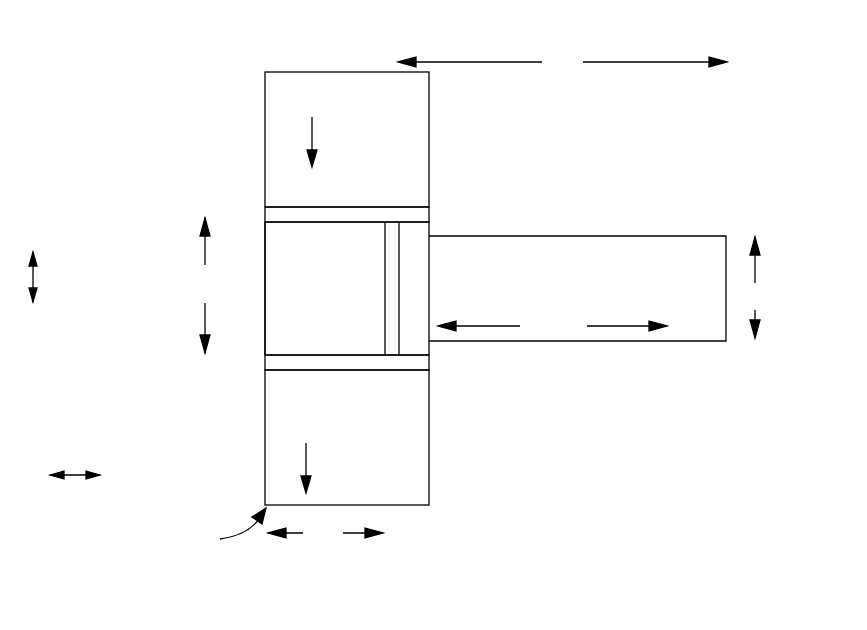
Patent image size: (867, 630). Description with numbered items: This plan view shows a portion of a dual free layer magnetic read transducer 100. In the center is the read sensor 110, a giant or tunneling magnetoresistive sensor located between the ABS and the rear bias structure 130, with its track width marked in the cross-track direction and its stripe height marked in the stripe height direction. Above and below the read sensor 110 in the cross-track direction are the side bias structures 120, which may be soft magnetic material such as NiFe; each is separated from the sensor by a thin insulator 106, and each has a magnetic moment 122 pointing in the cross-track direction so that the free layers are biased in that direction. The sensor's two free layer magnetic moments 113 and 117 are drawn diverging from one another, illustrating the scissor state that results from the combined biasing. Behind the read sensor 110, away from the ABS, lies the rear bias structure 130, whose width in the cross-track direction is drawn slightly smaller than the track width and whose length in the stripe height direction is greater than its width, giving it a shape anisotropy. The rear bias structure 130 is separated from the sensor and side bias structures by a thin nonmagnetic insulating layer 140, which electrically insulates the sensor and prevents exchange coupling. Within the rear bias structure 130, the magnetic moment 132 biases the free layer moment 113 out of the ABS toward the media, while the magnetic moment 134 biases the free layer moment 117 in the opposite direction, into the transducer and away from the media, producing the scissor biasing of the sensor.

The transducer 100 is at (381, 38).
The insulator 106 is at (263, 214).
The read sensor 110 is at (284, 337).
The magnetic moment 113 is at (297, 317).
The magnetic moment 117 is at (350, 318).
The side bias structures 120 is at (347, 288).
The magnetic moment 122 is at (312, 132).
The rear bias structure 130 is at (577, 288).
The magnetic moment 132 is at (488, 326).
The magnetic moment 134 is at (600, 326).
The insulating layer 140 is at (402, 260).